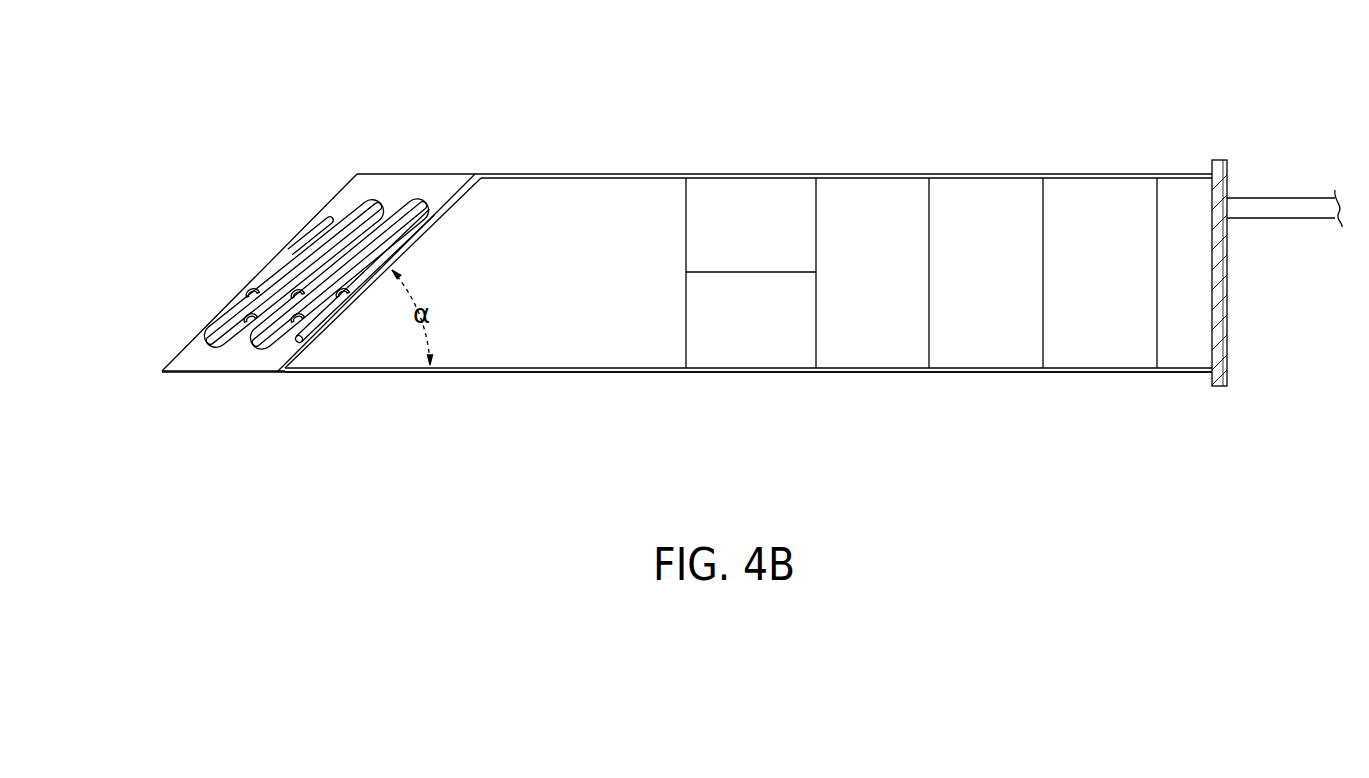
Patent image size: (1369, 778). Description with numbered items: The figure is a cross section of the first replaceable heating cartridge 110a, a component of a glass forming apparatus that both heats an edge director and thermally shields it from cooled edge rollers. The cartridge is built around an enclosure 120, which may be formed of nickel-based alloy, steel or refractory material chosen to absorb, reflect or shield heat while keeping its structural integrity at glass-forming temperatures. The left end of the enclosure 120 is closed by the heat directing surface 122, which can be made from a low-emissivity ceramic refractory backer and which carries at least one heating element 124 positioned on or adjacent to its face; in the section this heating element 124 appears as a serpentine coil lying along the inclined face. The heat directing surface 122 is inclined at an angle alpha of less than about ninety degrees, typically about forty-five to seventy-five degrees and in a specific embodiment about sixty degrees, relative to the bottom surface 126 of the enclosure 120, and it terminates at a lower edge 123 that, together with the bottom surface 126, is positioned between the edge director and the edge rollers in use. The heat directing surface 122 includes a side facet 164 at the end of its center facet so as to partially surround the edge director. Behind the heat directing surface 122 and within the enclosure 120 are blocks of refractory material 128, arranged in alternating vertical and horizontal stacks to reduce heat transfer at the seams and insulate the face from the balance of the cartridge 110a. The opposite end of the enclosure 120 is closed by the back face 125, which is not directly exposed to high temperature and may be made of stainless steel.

The first replaceable heating cartridge 110a is at (540, 477).
The enclosure 120 is at (603, 128).
The heat directing surface 122 is at (175, 353).
The lower edge 123 is at (247, 393).
The heating element 124 is at (357, 194).
The back face 125 is at (1258, 302).
The bottom surface 126 is at (380, 393).
The refractory blocks 128 is at (788, 147).
The side facet 164 is at (167, 280).